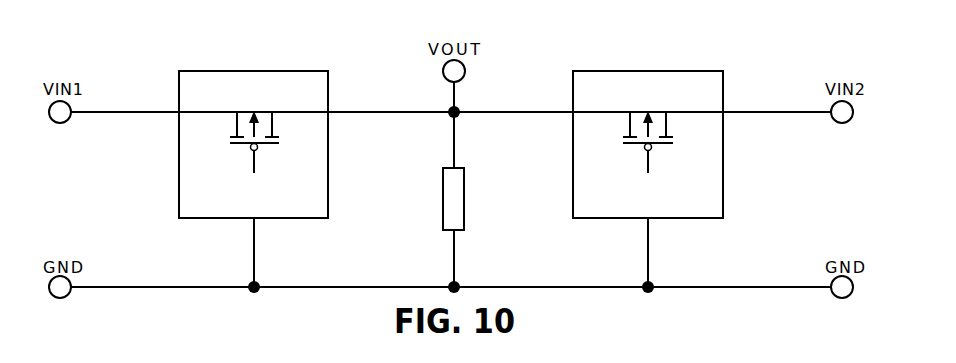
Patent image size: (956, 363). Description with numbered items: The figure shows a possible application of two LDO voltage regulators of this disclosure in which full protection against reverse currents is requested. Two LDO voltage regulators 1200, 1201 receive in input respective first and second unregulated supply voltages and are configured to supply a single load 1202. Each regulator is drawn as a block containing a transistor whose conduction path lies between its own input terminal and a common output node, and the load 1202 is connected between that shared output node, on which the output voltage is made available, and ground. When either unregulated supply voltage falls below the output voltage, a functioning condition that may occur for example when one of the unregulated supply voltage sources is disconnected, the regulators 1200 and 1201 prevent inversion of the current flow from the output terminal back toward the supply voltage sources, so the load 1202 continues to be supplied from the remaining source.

The LDO voltage regulator 1200 is at (253, 132).
The LDO voltage regulator 1201 is at (648, 132).
The load 1202 is at (490, 199).